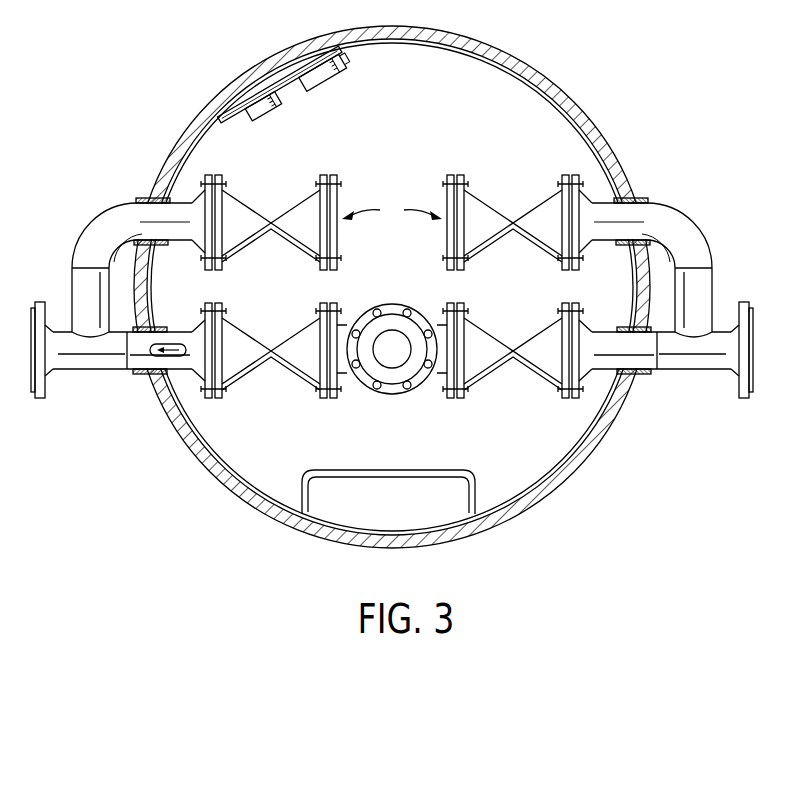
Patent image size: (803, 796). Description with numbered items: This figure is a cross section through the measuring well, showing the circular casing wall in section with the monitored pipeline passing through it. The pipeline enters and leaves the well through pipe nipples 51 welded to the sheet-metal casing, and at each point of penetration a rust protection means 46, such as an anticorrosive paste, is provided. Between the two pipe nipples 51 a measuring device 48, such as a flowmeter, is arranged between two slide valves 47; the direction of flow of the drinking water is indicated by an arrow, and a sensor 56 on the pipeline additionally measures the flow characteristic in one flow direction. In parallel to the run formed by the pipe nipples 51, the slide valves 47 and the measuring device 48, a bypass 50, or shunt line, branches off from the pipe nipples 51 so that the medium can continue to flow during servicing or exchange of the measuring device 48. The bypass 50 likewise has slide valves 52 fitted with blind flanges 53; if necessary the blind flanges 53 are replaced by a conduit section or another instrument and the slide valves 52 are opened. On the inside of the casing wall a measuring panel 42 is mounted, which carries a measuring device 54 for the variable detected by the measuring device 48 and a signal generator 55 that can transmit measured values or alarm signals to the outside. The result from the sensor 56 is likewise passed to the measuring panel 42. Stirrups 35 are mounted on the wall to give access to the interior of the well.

The stirrup 35 is at (434, 470).
The measuring panel 42 is at (310, 88).
The rust protection means 46 is at (143, 199).
The slide valve 47 is at (248, 340).
The measuring device 48 is at (389, 362).
The bypass 50 is at (392, 210).
The pipe nipple 51 is at (137, 358).
The slide valve 52 is at (246, 214).
The blind flange 53 is at (338, 197).
The measuring device 54 is at (336, 68).
The signal generator 55 is at (256, 110).
The sensor 56 is at (162, 356).